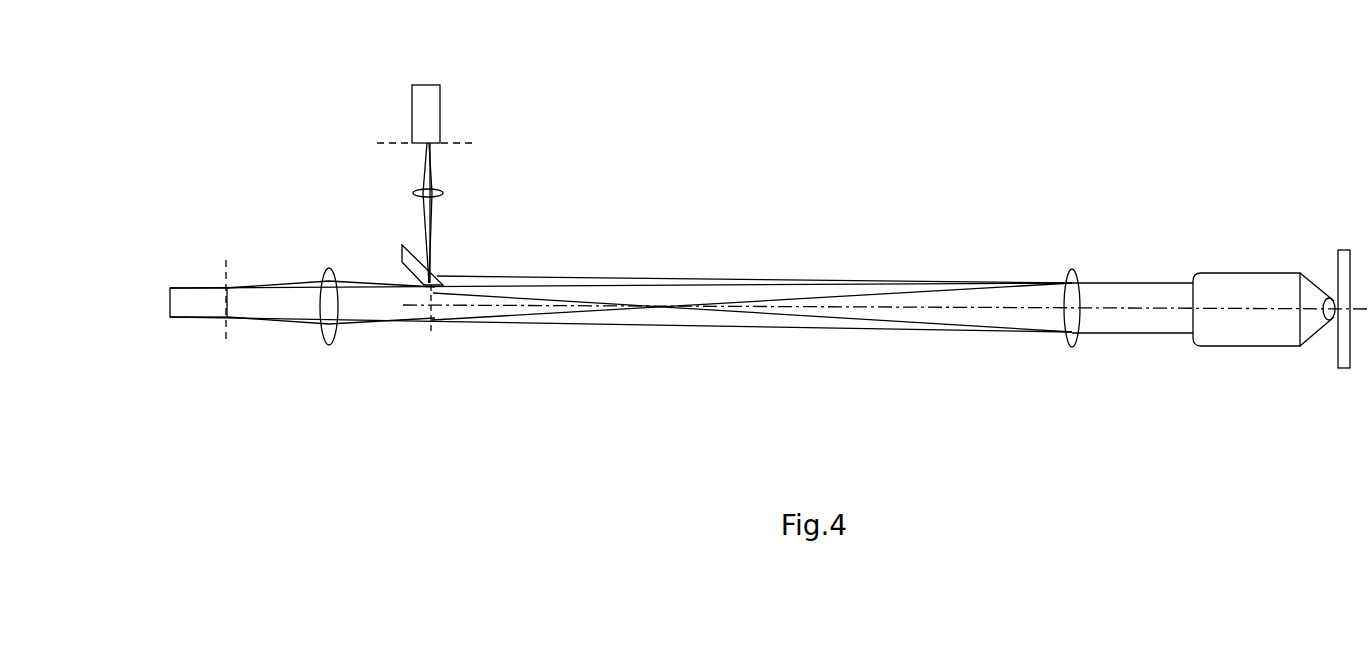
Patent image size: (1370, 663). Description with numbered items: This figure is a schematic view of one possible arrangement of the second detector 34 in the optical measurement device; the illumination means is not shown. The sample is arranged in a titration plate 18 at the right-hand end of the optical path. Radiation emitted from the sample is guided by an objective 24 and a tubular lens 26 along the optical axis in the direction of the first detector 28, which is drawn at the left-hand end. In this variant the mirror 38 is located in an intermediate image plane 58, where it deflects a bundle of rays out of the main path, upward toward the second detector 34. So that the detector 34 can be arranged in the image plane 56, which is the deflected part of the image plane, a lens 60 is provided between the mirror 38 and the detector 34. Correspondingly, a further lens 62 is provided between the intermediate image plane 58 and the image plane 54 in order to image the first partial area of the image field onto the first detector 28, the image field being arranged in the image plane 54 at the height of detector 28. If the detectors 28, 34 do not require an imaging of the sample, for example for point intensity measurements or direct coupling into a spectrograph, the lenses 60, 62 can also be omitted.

The titration plate 18 is at (1345, 360).
The objective 24 is at (1232, 288).
The tubular lens 26 is at (1073, 272).
The first detector 28 is at (182, 302).
The second detector 34 is at (433, 110).
The mirror 38 is at (400, 258).
The image plane 54 is at (225, 273).
The image plane 56 is at (458, 140).
The intermediate image plane 58 is at (427, 327).
The lens 60 is at (415, 193).
The lens 62 is at (330, 337).